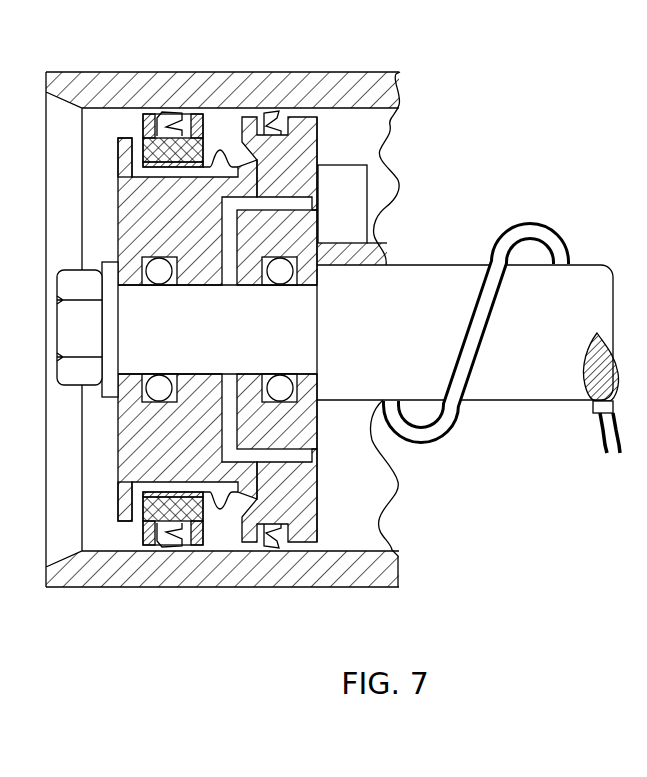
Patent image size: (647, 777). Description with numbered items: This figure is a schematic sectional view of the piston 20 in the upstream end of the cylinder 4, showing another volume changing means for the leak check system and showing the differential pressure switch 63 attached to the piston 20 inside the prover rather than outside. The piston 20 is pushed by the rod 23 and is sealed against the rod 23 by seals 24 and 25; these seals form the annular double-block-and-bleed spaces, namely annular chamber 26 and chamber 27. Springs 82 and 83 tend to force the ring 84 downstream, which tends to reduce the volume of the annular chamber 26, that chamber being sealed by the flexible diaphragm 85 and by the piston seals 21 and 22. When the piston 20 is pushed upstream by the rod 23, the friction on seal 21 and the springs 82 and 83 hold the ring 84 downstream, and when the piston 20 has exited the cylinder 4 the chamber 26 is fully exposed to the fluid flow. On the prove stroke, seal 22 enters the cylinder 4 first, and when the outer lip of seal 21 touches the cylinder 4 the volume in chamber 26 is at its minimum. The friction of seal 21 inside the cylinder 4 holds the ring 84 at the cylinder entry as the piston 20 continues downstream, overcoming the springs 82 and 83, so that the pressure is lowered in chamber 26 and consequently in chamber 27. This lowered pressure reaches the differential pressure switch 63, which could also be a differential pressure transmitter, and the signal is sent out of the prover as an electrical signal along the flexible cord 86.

The cylinder 4 is at (363, 73).
The piston 20 is at (153, 447).
The piston seal 21 is at (167, 118).
The piston seal 22 is at (268, 114).
The rod 23 is at (340, 401).
The seal 24 is at (155, 432).
The seal 25 is at (282, 406).
The annular chamber 26 is at (221, 124).
The annular chamber 27 is at (233, 286).
The differential pressure switch 63 is at (367, 188).
The spring 82 is at (120, 138).
The spring 83 is at (128, 516).
The ring 84 is at (142, 540).
The flexible diaphragm 85 is at (225, 515).
The flexible cord 86 is at (463, 417).